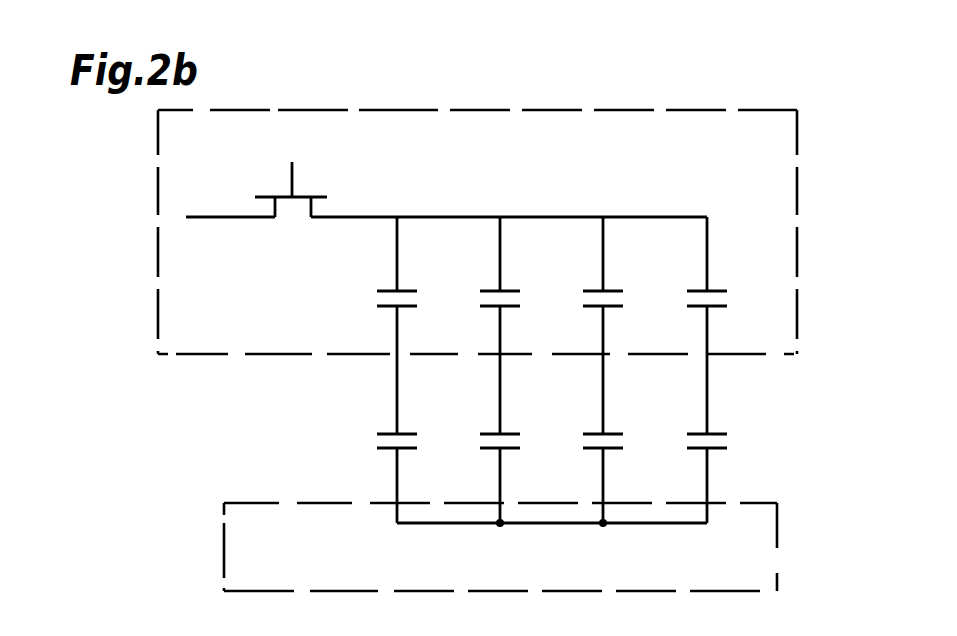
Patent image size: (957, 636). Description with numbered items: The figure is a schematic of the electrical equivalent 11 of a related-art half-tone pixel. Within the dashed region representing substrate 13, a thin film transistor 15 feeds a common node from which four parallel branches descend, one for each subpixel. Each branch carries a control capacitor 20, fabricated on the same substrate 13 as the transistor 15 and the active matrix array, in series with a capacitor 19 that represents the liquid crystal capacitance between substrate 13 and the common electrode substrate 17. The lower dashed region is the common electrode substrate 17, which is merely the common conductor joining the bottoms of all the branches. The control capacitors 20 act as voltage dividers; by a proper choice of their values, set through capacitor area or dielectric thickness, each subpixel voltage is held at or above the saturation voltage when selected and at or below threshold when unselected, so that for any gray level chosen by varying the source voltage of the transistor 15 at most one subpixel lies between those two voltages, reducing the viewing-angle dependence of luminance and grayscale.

The electrical equivalent 11 is at (345, 73).
The substrate 13 is at (800, 156).
The thin film transistor 15 is at (318, 196).
The common electrode substrate 17 is at (780, 522).
The capacitors 19 is at (404, 433).
The control capacitors 20 is at (404, 290).